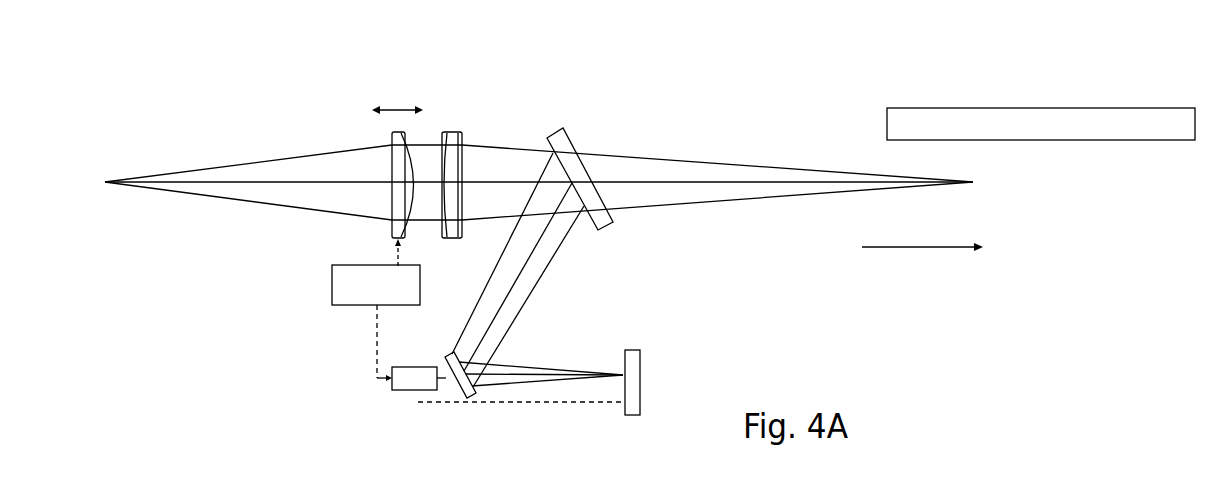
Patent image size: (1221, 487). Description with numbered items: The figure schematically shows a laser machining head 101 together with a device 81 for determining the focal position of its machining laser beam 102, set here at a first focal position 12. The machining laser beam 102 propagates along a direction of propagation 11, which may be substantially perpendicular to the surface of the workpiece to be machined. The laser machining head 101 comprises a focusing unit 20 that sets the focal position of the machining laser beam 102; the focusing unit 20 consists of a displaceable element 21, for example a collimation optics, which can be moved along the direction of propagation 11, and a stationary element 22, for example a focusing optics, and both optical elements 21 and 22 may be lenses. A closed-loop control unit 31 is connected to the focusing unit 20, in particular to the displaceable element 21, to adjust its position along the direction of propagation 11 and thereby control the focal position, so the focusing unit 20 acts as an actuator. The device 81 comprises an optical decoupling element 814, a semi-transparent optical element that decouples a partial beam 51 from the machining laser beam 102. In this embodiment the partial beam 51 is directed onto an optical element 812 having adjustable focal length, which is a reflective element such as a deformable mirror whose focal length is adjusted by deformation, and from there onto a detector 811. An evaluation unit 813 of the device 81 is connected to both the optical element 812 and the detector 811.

The laser machining head 101 is at (250, 255).
The machining laser beam 102 is at (700, 160).
The focusing unit 20 is at (485, 82).
The displaceable element 21 is at (390, 140).
The stationary element 22 is at (457, 130).
The optical decoupling element 814 is at (572, 138).
The partial beam 51 is at (562, 253).
The closed-loop control unit 31 is at (332, 288).
The device for determining a focal position 81 is at (672, 308).
The detector 811 is at (641, 397).
The optical element having adjustable focal length 812 is at (467, 400).
The evaluation unit 813 is at (418, 390).
The first focal position 12 is at (1041, 111).
The direction of propagation 11 is at (922, 234).